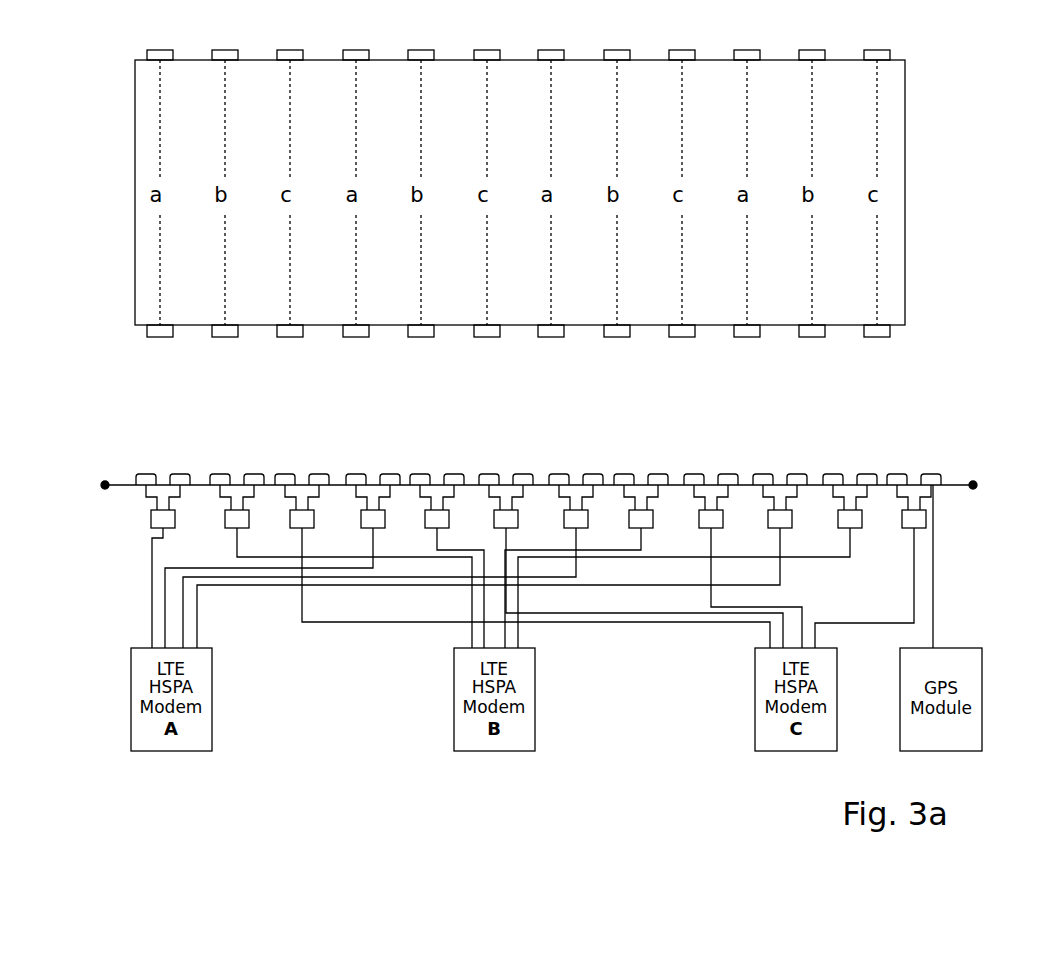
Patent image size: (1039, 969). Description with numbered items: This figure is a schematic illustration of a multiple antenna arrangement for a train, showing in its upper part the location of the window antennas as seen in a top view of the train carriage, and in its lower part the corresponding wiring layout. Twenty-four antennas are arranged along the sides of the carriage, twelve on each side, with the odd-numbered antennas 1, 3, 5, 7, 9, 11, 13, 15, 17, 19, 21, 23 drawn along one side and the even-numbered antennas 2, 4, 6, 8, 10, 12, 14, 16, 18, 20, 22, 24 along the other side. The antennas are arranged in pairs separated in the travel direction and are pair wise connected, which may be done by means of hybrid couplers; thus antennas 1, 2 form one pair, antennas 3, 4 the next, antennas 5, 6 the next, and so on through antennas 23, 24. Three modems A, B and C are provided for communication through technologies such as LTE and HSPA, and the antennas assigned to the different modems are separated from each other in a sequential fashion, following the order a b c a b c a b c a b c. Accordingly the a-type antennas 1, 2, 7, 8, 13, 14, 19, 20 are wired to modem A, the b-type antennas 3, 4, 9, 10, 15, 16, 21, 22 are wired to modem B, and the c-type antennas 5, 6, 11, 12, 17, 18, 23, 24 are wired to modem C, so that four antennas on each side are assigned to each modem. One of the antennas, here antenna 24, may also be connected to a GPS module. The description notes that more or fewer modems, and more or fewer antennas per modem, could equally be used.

The antenna 1 is at (154, 266).
The antenna 2 is at (168, 417).
The antenna 3 is at (224, 266).
The antenna 4 is at (238, 417).
The antenna 5 is at (289, 266).
The antenna 6 is at (303, 417).
The antenna 7 is at (356, 266).
The antenna 8 is at (371, 417).
The antenna 9 is at (421, 266).
The antenna 10 is at (437, 417).
The antenna 11 is at (488, 266).
The antenna 12 is at (505, 417).
The antenna 13 is at (555, 266).
The antenna 14 is at (572, 417).
The antenna 15 is at (620, 266).
The antenna 16 is at (637, 417).
The antenna 17 is at (688, 266).
The antenna 18 is at (705, 417).
The antenna 19 is at (755, 266).
The antenna 20 is at (772, 417).
The antenna 21 is at (822, 266).
The antenna 22 is at (839, 417).
The antenna 23 is at (887, 266).
The antenna 24 is at (904, 417).